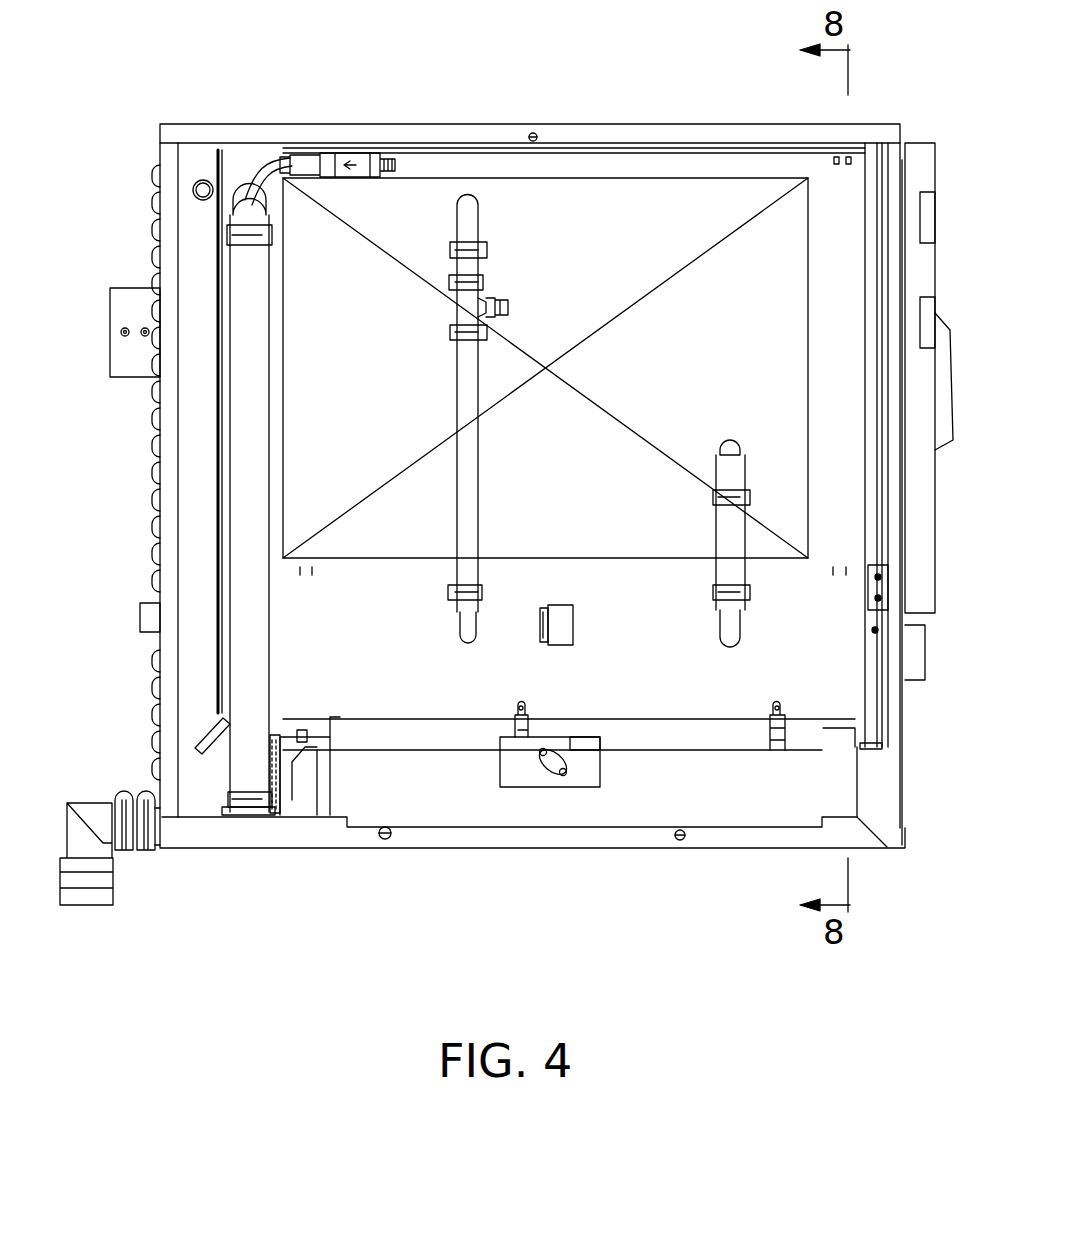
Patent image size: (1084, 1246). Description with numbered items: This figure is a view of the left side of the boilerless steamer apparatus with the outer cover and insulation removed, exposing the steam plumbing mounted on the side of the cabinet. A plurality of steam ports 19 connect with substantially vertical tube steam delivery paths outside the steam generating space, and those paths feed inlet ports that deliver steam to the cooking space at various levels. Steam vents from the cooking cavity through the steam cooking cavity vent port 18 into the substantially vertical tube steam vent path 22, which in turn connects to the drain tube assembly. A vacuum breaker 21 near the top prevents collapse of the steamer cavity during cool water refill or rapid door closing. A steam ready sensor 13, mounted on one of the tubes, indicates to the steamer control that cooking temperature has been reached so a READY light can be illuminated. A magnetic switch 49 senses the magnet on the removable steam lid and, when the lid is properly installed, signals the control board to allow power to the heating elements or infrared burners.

The steam ready sensor 13 is at (505, 300).
The steam cooking cavity vent port 18 is at (252, 175).
The steam ports 19 is at (466, 640).
The vacuum breaker 21 is at (398, 165).
The substantially vertical tube steam vent path 22 is at (245, 385).
The magnetic switch 49 is at (548, 630).